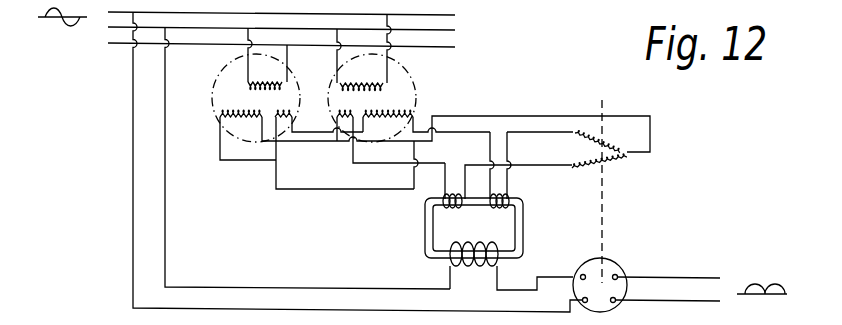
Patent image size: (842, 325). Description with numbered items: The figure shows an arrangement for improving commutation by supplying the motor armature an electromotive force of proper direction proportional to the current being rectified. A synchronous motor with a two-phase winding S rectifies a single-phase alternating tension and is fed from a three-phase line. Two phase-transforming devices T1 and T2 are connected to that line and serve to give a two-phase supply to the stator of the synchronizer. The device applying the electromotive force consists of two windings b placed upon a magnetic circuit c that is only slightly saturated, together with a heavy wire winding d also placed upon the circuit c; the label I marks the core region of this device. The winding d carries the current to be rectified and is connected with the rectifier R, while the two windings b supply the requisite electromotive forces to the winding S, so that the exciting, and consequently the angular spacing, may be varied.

The phase transforming device T1 is at (213, 90).
The phase transforming device T2 is at (407, 72).
The windings b is at (447, 198).
The magnetic circuit c is at (425, 230).
The instrument I is at (474, 228).
The heavy wire winding d is at (511, 268).
The two-phase winding of the synchronous motor S is at (617, 165).
The rectifier R is at (610, 260).